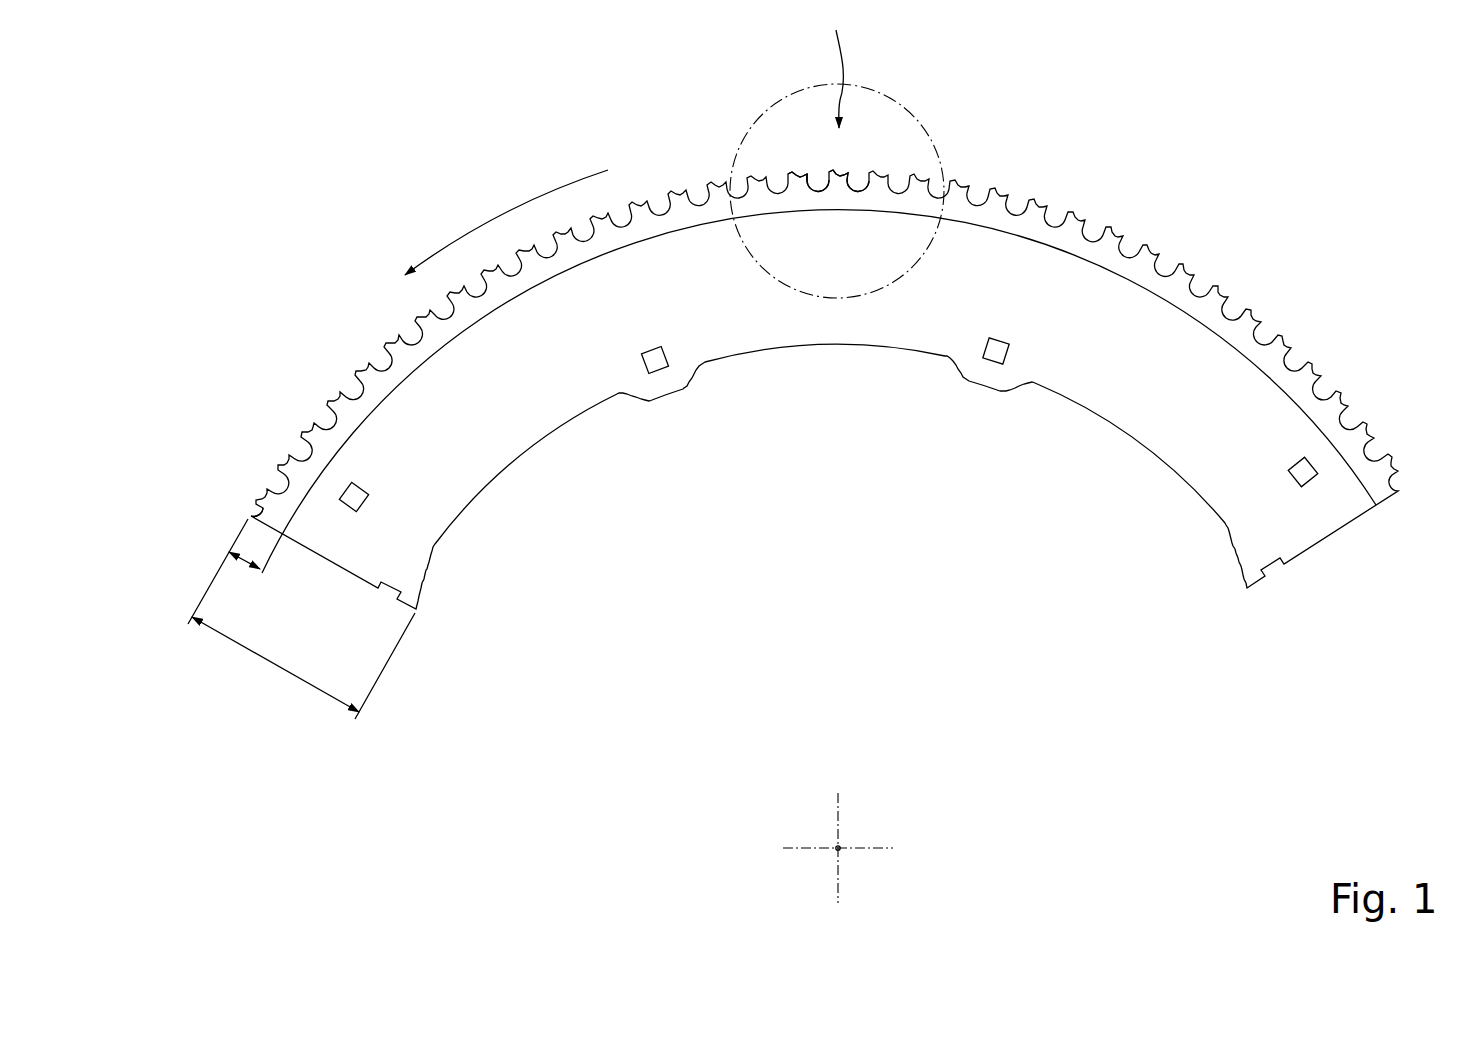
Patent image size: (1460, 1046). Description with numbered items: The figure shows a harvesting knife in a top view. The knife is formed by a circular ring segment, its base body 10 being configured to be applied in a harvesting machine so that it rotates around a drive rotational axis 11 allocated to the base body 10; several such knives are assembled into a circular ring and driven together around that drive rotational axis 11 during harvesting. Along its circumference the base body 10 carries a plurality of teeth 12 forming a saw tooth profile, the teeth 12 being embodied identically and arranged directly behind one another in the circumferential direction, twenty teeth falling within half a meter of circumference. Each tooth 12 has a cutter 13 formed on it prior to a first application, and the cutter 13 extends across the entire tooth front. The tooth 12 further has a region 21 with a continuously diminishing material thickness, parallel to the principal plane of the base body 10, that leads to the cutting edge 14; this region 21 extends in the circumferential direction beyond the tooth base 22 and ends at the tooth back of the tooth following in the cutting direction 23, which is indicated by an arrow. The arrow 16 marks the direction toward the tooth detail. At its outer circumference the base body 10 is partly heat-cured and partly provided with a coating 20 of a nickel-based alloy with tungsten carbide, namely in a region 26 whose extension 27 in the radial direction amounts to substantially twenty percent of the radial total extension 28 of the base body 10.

The base body 10 is at (1333, 538).
The drive rotational axis 11 is at (838, 848).
The teeth 12 is at (840, 163).
The cutter 13 is at (839, 183).
The cutting edge 14 is at (815, 188).
The force direction arrow 16 is at (837, 64).
The coating 20 is at (1112, 262).
The region with continuously diminishing material thickness 21 is at (816, 165).
The tooth base 22 is at (818, 190).
The cutting direction 23 is at (499, 212).
The region 26 is at (258, 527).
The extension 27 is at (231, 556).
The radial total extension 28 is at (278, 664).